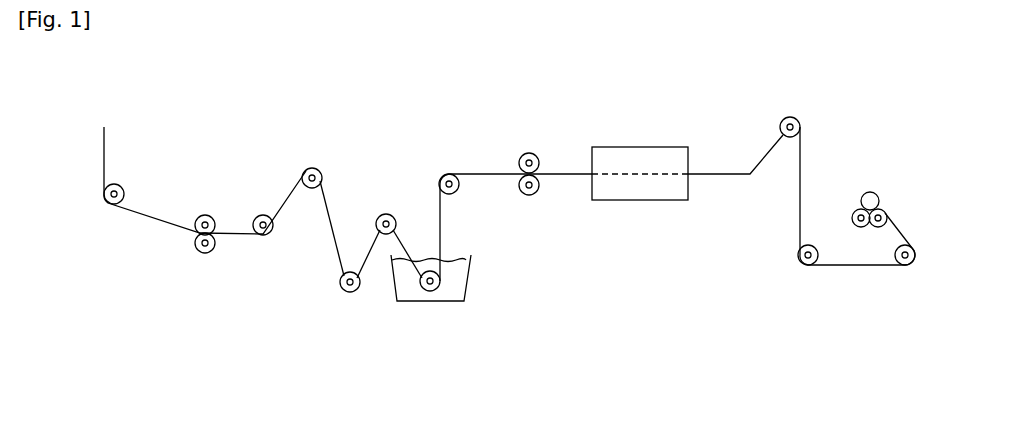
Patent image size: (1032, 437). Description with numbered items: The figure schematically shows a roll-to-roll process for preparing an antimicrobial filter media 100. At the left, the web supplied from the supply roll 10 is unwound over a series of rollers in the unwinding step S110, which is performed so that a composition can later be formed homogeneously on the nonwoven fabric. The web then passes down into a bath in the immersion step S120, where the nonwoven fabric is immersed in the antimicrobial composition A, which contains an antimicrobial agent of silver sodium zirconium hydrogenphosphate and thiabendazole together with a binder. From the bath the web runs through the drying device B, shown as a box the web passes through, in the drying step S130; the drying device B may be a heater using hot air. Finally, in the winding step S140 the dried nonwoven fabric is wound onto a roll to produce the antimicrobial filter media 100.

The substrate film 10 is at (104, 146).
The unwinding step S110 is at (272, 242).
The immersion step S120 is at (450, 311).
The antimicrobial composition A is at (460, 276).
The drying device B is at (657, 147).
The drying step S130 is at (644, 188).
The winding step S140 is at (871, 186).
The antimicrobial filter media 100 is at (880, 201).